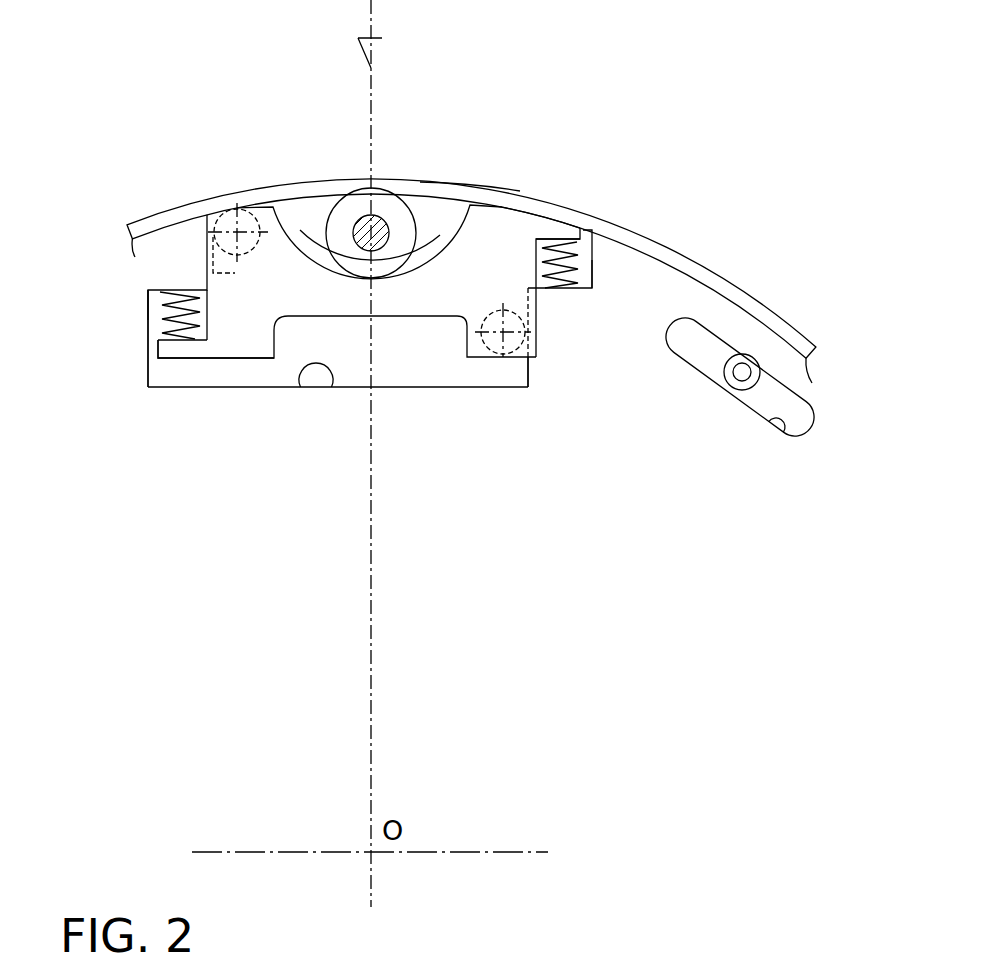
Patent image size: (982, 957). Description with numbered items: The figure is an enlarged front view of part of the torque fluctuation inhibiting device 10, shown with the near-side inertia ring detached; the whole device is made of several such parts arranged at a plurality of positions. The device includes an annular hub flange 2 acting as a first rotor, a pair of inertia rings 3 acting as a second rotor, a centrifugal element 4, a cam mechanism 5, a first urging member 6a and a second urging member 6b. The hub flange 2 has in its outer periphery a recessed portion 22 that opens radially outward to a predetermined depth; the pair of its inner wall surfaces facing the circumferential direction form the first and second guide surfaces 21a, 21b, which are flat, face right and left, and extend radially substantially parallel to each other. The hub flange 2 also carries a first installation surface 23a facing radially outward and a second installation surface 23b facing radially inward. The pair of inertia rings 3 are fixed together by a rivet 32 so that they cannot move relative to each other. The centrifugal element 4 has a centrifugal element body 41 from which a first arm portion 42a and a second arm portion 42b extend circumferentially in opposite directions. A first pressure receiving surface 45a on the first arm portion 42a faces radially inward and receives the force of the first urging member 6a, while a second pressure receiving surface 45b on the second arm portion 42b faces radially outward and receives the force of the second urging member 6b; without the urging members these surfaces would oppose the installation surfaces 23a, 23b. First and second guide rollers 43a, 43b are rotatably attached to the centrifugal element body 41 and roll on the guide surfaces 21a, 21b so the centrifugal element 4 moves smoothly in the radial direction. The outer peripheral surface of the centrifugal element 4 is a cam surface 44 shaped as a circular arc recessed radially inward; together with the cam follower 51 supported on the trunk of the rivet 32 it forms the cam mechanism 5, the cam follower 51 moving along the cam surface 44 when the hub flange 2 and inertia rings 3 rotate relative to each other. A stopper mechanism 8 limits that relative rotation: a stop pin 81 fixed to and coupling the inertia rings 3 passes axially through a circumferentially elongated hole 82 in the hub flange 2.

The torque fluctuation inhibiting device 10 is at (589, 98).
The hub flange 2 is at (653, 244).
The inertia rings 3 is at (465, 182).
The centrifugal element 4 is at (506, 205).
The cam mechanism 5 is at (322, 253).
The cam follower 51 is at (336, 205).
The rivet 32 is at (371, 215).
The cam surface 44 is at (427, 210).
The centrifugal element body 41 is at (408, 312).
The first arm portion 42a is at (562, 235).
The second arm portion 42b is at (177, 352).
The first guide roller 43a is at (490, 352).
The second guide roller 43b is at (229, 213).
The first pressure receiving surface 45a is at (584, 249).
The second pressure receiving surface 45b is at (148, 333).
The first urging member 6a is at (558, 290).
The second urging member 6b is at (160, 324).
The first guide surface 21a is at (527, 370).
The second guide surface 21b is at (237, 262).
The recessed portion 22 is at (297, 389).
The first installation surface 23a is at (592, 280).
The second installation surface 23b is at (148, 302).
The stopper mechanism 8 is at (752, 328).
The stop pin 81 is at (740, 378).
The elongated hole 82 is at (780, 428).